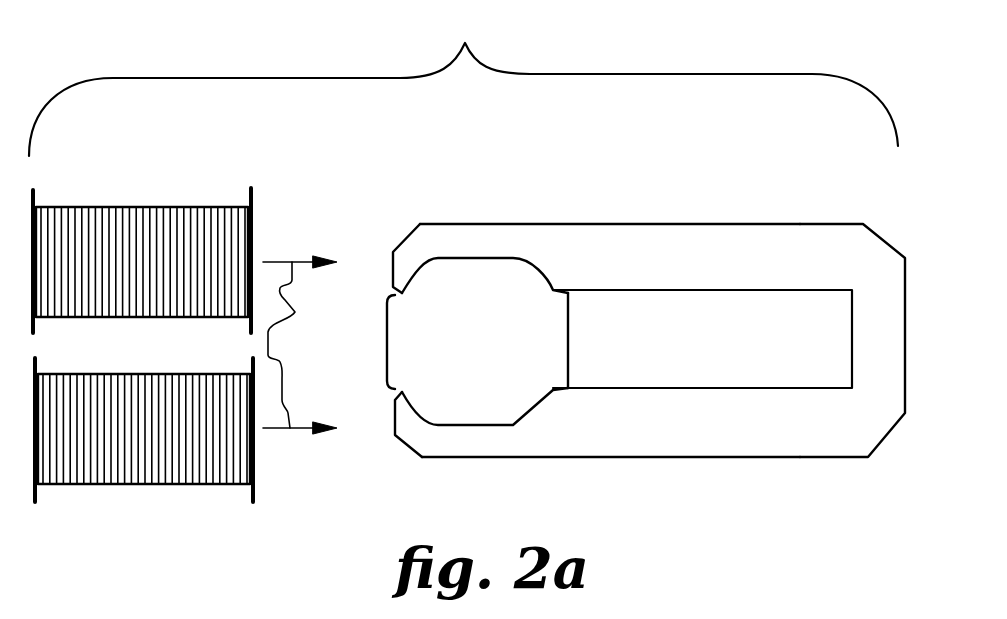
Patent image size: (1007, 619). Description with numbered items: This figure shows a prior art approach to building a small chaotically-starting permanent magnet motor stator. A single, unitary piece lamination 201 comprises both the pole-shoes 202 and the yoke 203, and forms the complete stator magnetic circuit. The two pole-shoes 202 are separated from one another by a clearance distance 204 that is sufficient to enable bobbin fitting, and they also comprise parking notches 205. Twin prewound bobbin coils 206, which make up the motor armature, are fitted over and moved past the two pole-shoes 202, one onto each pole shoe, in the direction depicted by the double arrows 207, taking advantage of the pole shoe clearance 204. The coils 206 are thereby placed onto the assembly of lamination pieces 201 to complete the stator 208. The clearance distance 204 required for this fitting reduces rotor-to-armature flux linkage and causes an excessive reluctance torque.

The lamination 201 is at (630, 222).
The pole-shoes 202 is at (472, 258).
The yoke 203 is at (852, 237).
The clearance distance 204 is at (387, 340).
The parking notches 205 is at (428, 275).
The prewound bobbin coils 206 is at (150, 285).
The double arrows 207 is at (304, 345).
The stator 208 is at (463, 86).